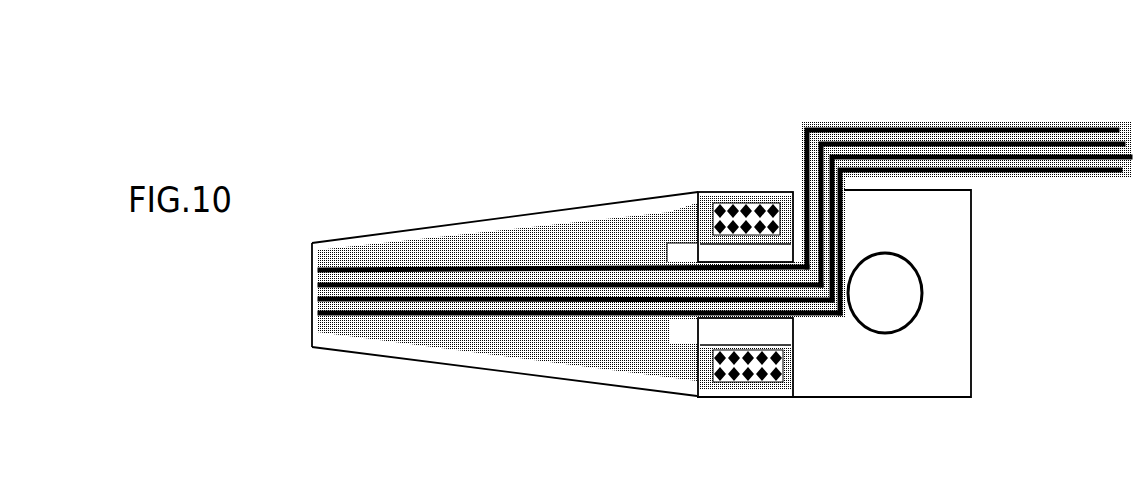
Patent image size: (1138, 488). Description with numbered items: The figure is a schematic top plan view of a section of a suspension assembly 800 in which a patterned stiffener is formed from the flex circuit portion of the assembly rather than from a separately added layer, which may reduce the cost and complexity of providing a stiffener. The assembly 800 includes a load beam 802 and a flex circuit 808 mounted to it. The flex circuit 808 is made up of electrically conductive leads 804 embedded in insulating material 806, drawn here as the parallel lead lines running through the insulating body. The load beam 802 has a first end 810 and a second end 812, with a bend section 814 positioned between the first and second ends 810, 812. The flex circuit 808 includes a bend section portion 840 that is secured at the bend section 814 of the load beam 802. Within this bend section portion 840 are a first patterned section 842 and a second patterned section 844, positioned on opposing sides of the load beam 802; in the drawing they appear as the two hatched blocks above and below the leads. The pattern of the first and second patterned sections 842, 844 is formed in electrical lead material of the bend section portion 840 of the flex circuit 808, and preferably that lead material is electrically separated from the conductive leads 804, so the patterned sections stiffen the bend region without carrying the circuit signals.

The suspension assembly 800 is at (1018, 402).
The load beam 802 is at (585, 200).
The electrically conductive leads 804 is at (320, 270).
The insulating material 806 is at (495, 248).
The flex circuit 808 is at (942, 120).
The first end 810 is at (307, 230).
The second end 812 is at (982, 265).
The bend section 814 is at (731, 173).
The bend section portion 840 is at (693, 200).
The first patterned section 842 is at (772, 377).
The second patterned section 844 is at (767, 203).